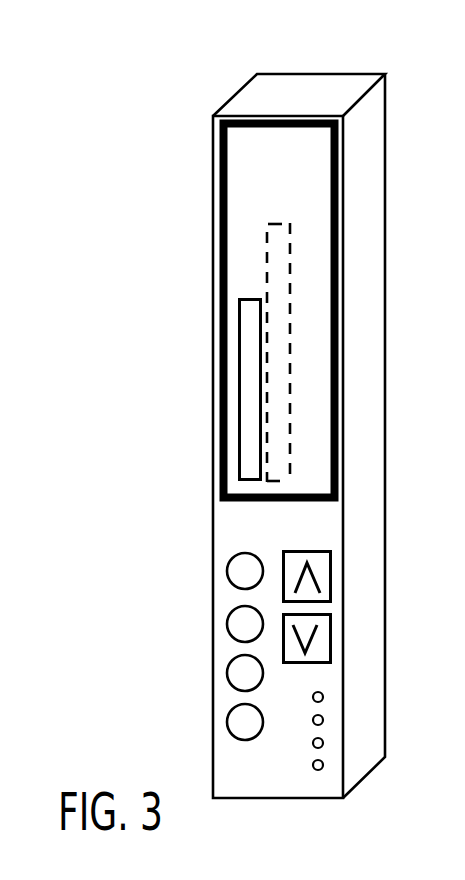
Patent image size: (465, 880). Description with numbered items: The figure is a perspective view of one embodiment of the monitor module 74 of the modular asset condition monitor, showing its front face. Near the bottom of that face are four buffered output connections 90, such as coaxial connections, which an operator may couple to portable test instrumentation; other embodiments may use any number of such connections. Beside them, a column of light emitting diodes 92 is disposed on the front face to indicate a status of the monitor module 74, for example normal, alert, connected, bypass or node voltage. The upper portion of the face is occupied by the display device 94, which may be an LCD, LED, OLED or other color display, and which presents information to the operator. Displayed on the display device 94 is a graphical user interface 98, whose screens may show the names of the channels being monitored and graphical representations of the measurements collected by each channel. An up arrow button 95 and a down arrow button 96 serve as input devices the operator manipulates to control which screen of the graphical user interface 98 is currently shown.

The monitor module 74 is at (192, 83).
The buffered output connections 90 is at (202, 553).
The light emitting diodes 92 is at (348, 685).
The display device 94 is at (343, 148).
The up arrow button 95 is at (320, 572).
The down arrow button 96 is at (317, 652).
The graphical user interface 98 is at (253, 188).